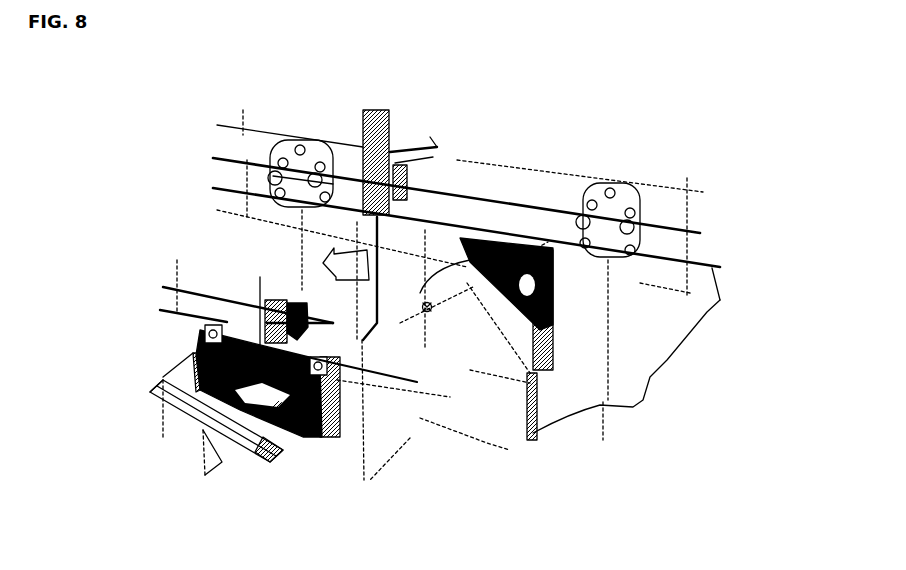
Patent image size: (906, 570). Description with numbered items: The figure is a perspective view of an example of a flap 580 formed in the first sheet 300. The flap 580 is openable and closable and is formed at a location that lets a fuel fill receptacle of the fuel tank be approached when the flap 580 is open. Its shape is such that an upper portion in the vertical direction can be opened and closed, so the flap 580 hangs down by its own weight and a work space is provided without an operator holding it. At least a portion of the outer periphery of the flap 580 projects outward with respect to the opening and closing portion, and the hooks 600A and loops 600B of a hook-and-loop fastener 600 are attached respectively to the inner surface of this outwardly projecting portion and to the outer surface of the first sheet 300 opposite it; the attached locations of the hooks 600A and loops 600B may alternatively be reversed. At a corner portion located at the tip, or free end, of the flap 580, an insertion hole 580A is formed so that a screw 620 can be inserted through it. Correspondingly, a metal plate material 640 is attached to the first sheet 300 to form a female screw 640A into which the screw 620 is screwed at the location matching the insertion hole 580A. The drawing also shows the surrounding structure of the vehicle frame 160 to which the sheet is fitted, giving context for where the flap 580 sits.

The vehicle frame rail 160 is at (695, 252).
The first sheet 300 is at (613, 393).
The flap 580 is at (400, 225).
The insertion hole 580A is at (165, 393).
The hook-and-loop fastener 600 is at (346, 430).
The hooks 600A is at (340, 425).
The loops 600B is at (340, 422).
The screw 620 is at (431, 311).
The metal plate material 640 is at (526, 248).
The female screw 640A is at (533, 248).